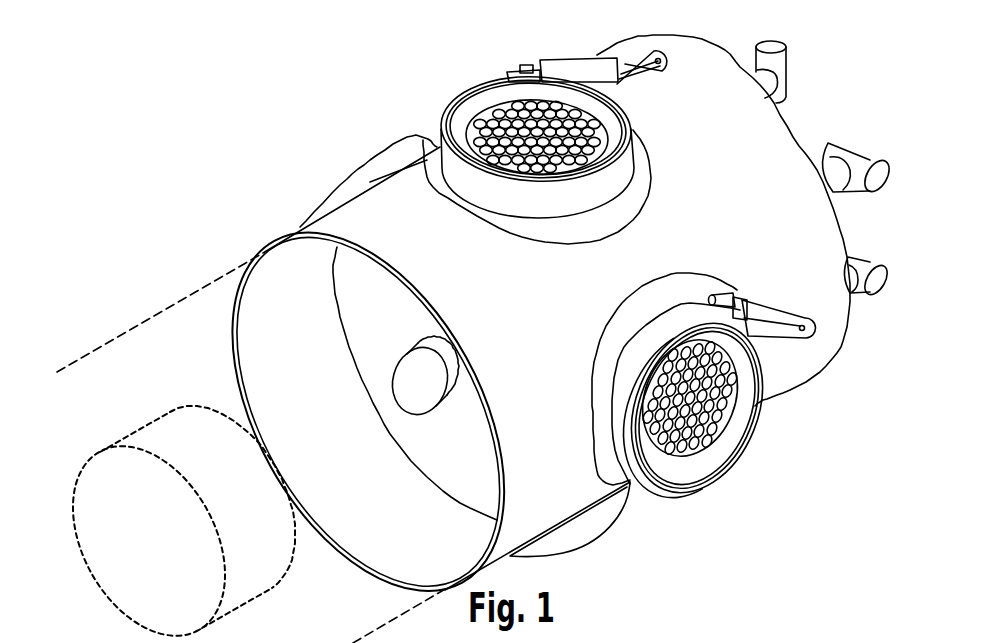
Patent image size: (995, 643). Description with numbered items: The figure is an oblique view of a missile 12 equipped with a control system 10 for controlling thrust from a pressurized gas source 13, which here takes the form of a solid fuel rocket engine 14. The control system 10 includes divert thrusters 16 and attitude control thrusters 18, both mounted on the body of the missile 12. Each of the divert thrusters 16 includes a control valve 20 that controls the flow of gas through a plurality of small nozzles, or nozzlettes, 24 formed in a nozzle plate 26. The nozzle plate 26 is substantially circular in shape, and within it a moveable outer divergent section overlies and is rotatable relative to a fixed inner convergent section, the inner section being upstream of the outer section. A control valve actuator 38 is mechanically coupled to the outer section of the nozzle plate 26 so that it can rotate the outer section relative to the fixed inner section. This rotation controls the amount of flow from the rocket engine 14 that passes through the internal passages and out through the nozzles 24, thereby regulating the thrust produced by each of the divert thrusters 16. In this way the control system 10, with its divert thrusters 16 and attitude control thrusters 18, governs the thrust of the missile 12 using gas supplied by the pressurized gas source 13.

The control system 10 is at (380, 42).
The missile 12 is at (208, 188).
The pressurized gas source 13 is at (132, 375).
The solid fuel rocket engine 14 is at (191, 402).
The divert thrusters 16 is at (466, 62).
The attitude control thrusters 18 is at (875, 250).
The control valve 20 is at (436, 106).
The nozzles 24 is at (550, 100).
The nozzle plate 26 is at (497, 70).
The control valve actuator 38 is at (593, 70).